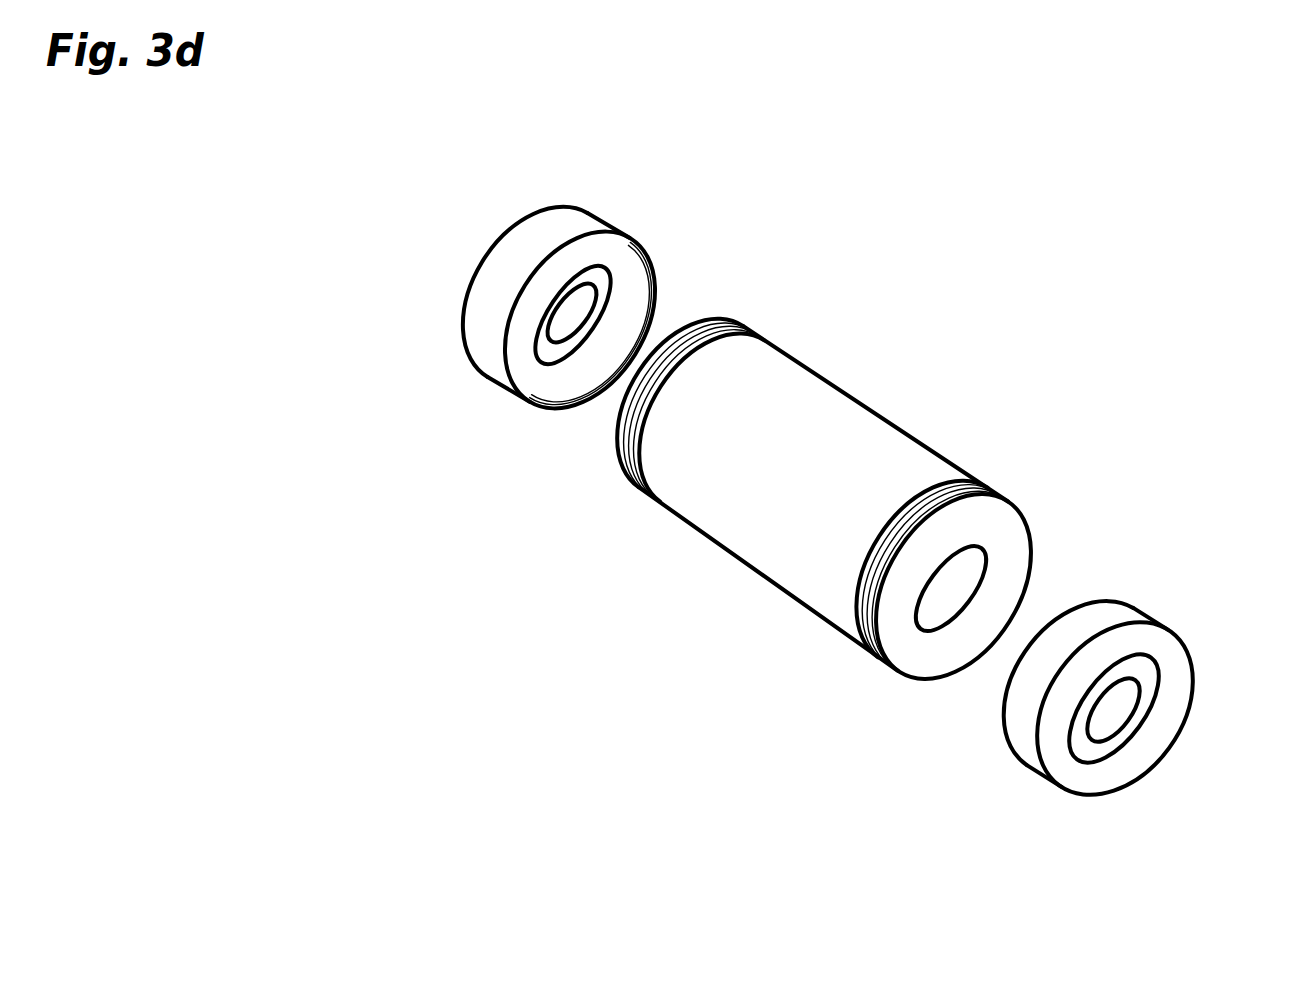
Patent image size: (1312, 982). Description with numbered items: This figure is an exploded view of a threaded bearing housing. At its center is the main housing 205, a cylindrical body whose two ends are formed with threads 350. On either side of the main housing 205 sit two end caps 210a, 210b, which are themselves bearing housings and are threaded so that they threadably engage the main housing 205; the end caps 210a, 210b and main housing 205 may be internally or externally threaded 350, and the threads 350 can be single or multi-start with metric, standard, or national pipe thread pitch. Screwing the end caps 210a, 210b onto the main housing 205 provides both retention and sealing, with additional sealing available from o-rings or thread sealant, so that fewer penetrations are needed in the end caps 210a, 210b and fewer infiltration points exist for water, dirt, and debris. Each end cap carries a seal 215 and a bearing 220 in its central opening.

The main housing 205 is at (827, 378).
The threads 350 is at (745, 326).
The end cap 210a is at (1148, 713).
The end cap 210b is at (574, 317).
The seal 215 is at (1123, 752).
The bearing 220 is at (570, 355).